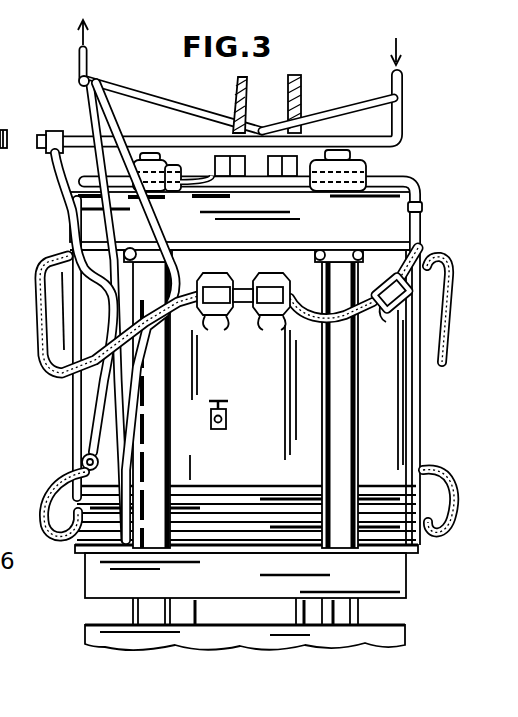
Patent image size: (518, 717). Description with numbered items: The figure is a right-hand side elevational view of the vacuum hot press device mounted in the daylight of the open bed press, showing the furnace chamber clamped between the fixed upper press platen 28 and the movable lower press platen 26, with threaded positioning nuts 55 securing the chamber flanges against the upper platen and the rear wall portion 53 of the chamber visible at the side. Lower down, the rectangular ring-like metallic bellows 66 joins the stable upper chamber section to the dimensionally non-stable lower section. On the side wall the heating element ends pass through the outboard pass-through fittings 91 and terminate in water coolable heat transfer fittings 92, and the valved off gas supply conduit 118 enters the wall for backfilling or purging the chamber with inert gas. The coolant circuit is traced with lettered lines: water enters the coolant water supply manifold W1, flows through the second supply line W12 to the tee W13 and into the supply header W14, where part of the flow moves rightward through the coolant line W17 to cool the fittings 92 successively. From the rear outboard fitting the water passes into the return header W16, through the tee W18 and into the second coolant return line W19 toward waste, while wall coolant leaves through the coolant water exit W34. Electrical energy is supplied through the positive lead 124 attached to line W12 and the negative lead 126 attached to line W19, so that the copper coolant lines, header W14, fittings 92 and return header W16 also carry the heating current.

The coolant water supply manifold W1 is at (403, 95).
The second supply line W12 is at (332, 89).
The tee W13 is at (66, 203).
The supply header W14 is at (66, 230).
The return header W16 is at (422, 243).
The coolant line W17 is at (333, 322).
The tee W18 is at (422, 206).
The second coolant return line W19 is at (415, 150).
The coolant water exit W34 is at (82, 457).
The lower press platen 26 is at (262, 574).
The upper press platen 28 is at (333, 221).
The rear wall portion 53 is at (425, 403).
The threaded positioning nuts 55 is at (140, 248).
The bellows 66 is at (404, 532).
The heating element pass-through fittings 91 is at (260, 318).
The water coolable heat transfer fittings 92 is at (263, 272).
The valved off gas supply conduit 118 is at (227, 417).
The positive electrical lead 124 is at (233, 82).
The negative electrical lead 126 is at (297, 70).